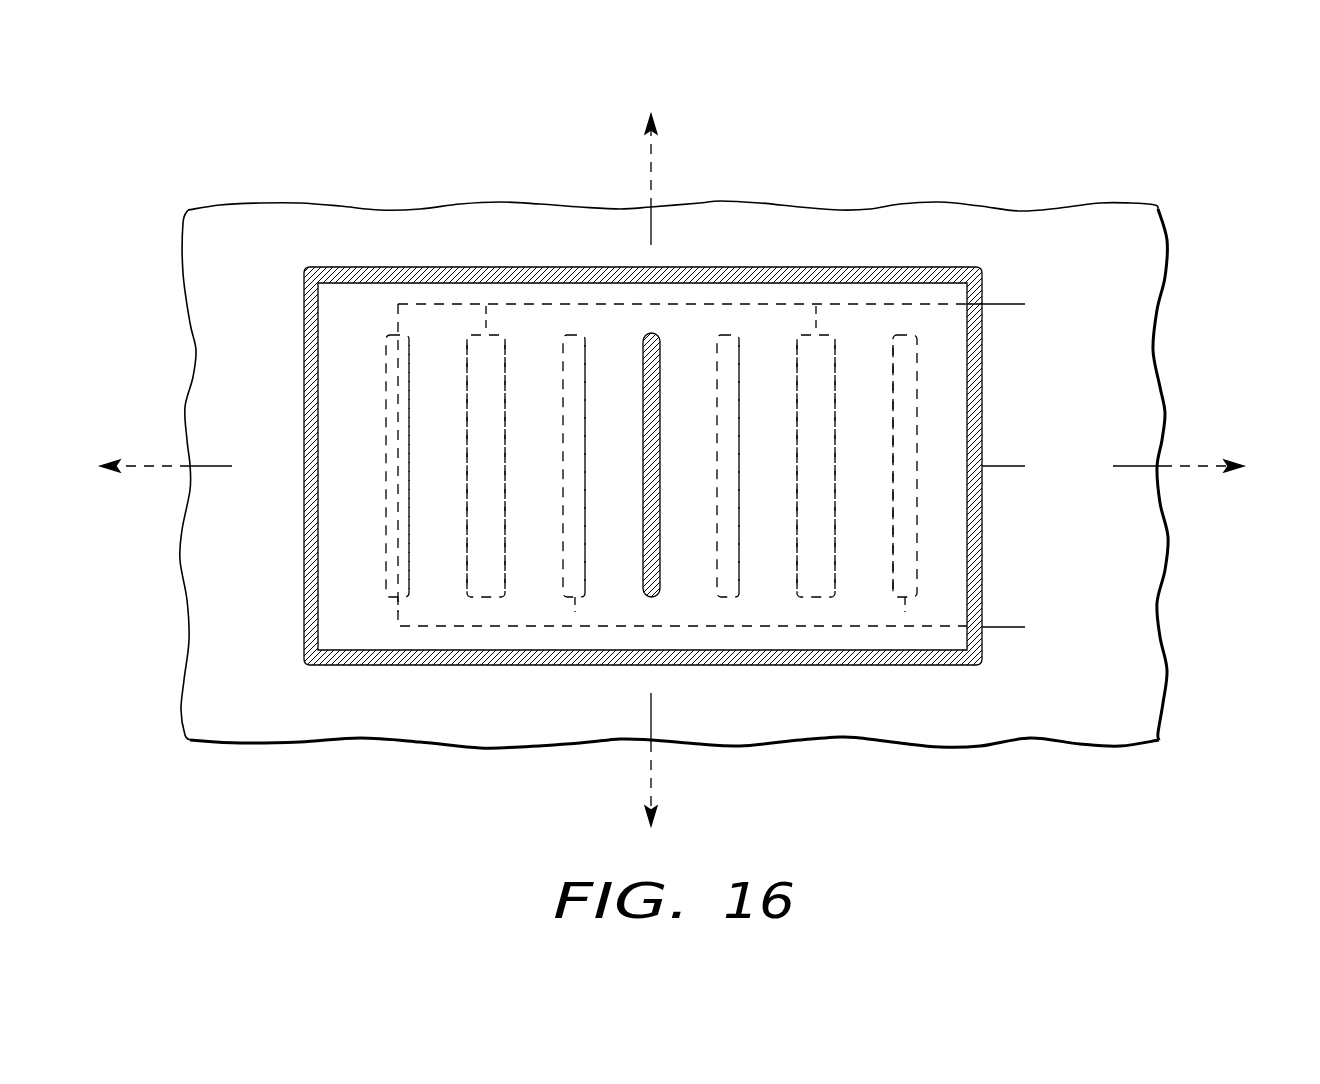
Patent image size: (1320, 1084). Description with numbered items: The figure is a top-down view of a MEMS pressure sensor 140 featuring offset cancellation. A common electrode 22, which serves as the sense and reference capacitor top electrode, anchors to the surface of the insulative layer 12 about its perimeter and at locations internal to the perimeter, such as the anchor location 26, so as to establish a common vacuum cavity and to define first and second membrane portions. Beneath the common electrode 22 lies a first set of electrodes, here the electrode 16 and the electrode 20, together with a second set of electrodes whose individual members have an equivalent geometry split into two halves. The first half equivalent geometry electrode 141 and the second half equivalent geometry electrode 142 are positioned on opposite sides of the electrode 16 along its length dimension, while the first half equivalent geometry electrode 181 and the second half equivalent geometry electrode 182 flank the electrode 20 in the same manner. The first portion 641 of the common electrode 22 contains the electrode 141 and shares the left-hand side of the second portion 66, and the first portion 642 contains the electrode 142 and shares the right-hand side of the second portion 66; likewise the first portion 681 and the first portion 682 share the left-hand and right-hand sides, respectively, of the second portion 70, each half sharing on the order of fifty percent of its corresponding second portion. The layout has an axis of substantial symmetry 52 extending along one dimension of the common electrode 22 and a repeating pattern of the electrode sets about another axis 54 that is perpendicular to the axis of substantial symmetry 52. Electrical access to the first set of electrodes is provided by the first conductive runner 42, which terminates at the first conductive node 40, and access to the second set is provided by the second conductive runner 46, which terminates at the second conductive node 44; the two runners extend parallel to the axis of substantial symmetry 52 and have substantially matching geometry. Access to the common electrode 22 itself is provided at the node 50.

The insulative layer 12 is at (1084, 705).
The MEMS pressure sensor 140 is at (1229, 117).
The common electrode 22 is at (940, 264).
The first conductive node 40 is at (1016, 306).
The first conductive runner 42 is at (606, 306).
The second conductive node 44 is at (1016, 629).
The second conductive runner 46 is at (605, 626).
The node 50 is at (1016, 468).
The axis of substantial symmetry 52 is at (1184, 464).
The axis 54 is at (652, 142).
The first portion 641 is at (402, 238).
The second portion 66 is at (488, 238).
The first portion 642 is at (577, 238).
The first portion 681 is at (732, 238).
The second portion 70 is at (820, 238).
The first portion 682 is at (907, 238).
The first half equivalent geometry electrode 141 is at (441, 437).
The second half equivalent geometry electrode 142 is at (585, 446).
The first half equivalent geometry electrode 181 is at (740, 466).
The second half equivalent geometry electrode 182 is at (893, 466).
The electrode of the first set 16 is at (500, 502).
The electrode of the first set 20 is at (830, 503).
The anchor location 26 is at (643, 427).